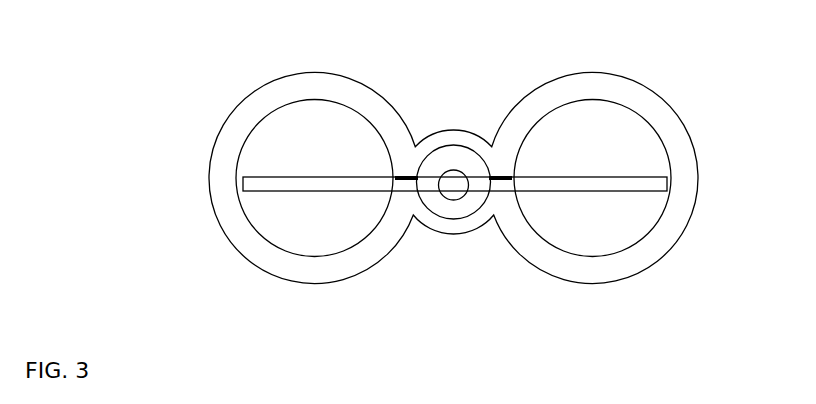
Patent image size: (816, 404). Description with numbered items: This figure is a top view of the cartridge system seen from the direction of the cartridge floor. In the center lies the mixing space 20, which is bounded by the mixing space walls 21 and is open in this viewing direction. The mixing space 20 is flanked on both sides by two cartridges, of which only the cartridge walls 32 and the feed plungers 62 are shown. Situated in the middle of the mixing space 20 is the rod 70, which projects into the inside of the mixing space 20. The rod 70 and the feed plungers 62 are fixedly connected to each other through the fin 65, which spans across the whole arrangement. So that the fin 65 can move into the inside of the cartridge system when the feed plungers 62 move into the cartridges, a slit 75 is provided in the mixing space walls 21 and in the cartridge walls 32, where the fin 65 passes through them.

The mixing space 20 is at (438, 203).
The mixing space walls 21 is at (456, 228).
The cartridge walls 32 is at (341, 88).
The feed plungers 62 is at (308, 135).
The fin 65 is at (303, 187).
The rod 70 is at (454, 185).
The slit 75 is at (406, 175).